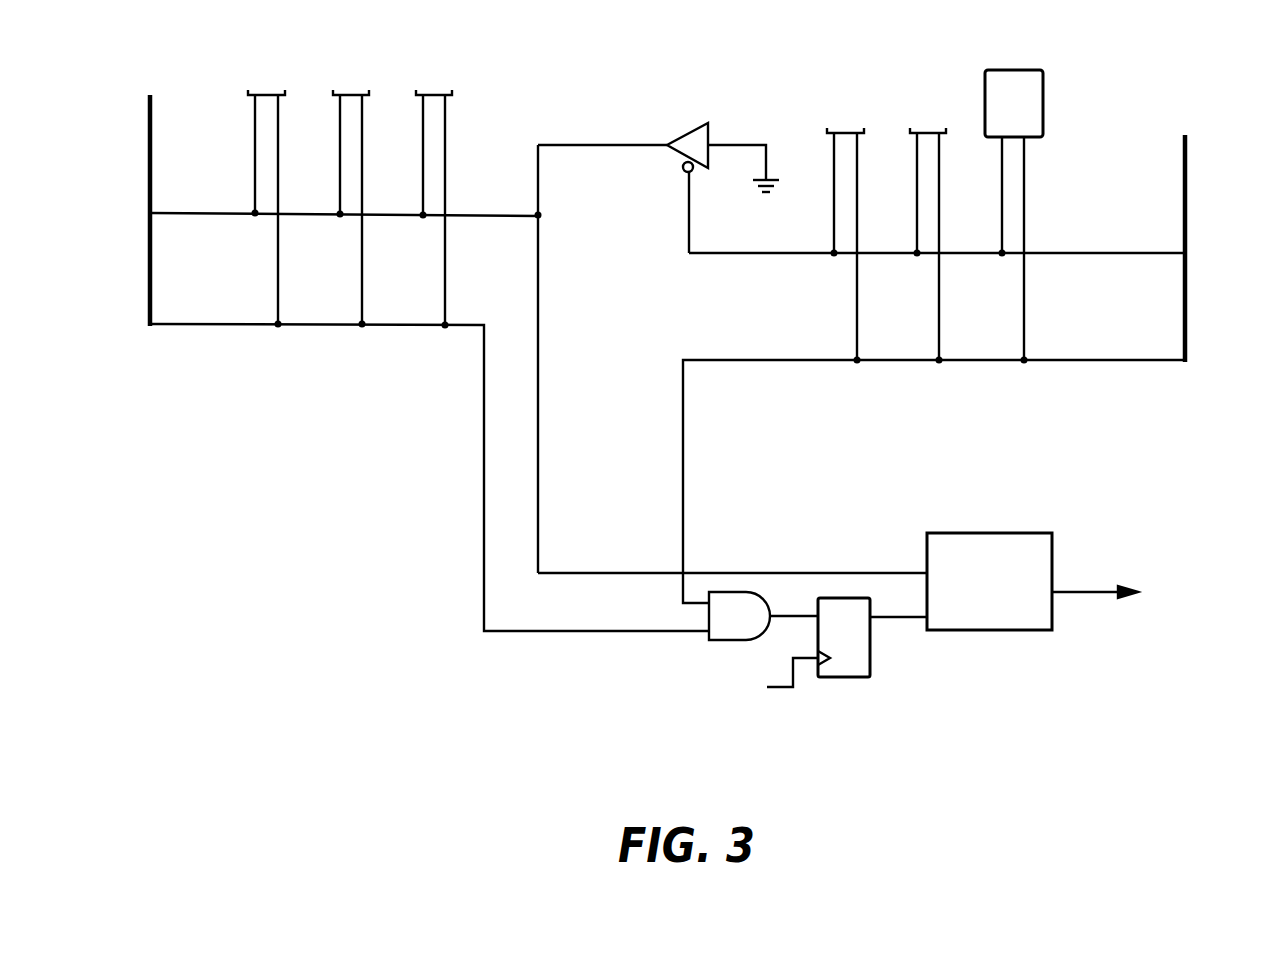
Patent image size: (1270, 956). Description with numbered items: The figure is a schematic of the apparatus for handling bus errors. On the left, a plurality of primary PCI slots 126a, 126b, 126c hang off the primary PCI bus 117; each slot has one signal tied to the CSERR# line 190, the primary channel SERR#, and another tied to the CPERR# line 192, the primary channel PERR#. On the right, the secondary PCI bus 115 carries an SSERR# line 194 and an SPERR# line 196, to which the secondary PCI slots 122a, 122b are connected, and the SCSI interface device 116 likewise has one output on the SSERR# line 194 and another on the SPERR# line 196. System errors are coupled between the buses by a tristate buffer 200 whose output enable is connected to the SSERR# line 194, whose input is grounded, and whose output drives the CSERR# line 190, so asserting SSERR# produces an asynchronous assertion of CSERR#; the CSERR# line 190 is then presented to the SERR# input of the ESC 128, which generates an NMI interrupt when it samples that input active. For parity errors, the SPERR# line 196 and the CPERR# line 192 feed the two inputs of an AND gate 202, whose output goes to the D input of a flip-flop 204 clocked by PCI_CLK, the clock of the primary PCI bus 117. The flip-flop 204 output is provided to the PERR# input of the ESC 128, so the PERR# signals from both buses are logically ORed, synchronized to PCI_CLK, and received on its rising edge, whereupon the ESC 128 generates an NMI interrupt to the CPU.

The secondary PCI bus 115 is at (1187, 228).
The SCSI interface device 116 is at (1026, 69).
The primary PCI bus 117 is at (148, 178).
The secondary PCI slot 122a is at (843, 132).
The secondary PCI slot 122b is at (926, 132).
The primary PCI slot 126a is at (264, 94).
The primary PCI slot 126b is at (348, 94).
The primary PCI slot 126c is at (432, 94).
The ESC 128 is at (1015, 631).
The CSERR# line 190 is at (206, 213).
The CPERR# line 192 is at (211, 324).
The SSERR# line 194 is at (1069, 252).
The SPERR# line 196 is at (1079, 359).
The tristate buffer 200 is at (691, 133).
The AND gate 202 is at (736, 641).
The flip-flop 204 is at (849, 678).